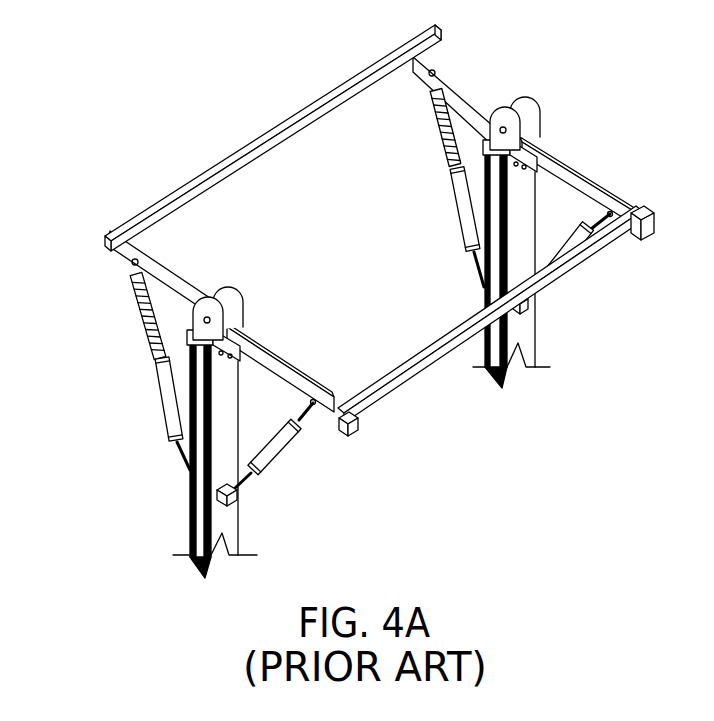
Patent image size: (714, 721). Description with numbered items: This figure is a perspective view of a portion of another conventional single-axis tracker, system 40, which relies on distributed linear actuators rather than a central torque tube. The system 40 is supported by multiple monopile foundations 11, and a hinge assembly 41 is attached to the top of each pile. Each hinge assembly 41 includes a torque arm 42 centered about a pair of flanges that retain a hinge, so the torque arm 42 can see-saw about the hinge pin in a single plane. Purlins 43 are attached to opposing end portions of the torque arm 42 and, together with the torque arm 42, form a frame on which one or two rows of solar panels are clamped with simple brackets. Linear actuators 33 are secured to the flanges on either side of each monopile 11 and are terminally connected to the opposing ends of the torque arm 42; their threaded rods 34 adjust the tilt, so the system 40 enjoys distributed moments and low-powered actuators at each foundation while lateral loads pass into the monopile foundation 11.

The system 40 is at (157, 52).
The monopile foundation 11 is at (243, 533).
The linear actuator 33 is at (158, 402).
The threaded rod 34 is at (133, 326).
The hinge assembly 41 is at (222, 292).
The torque arm 42 is at (285, 358).
The purlin 43 is at (190, 182).